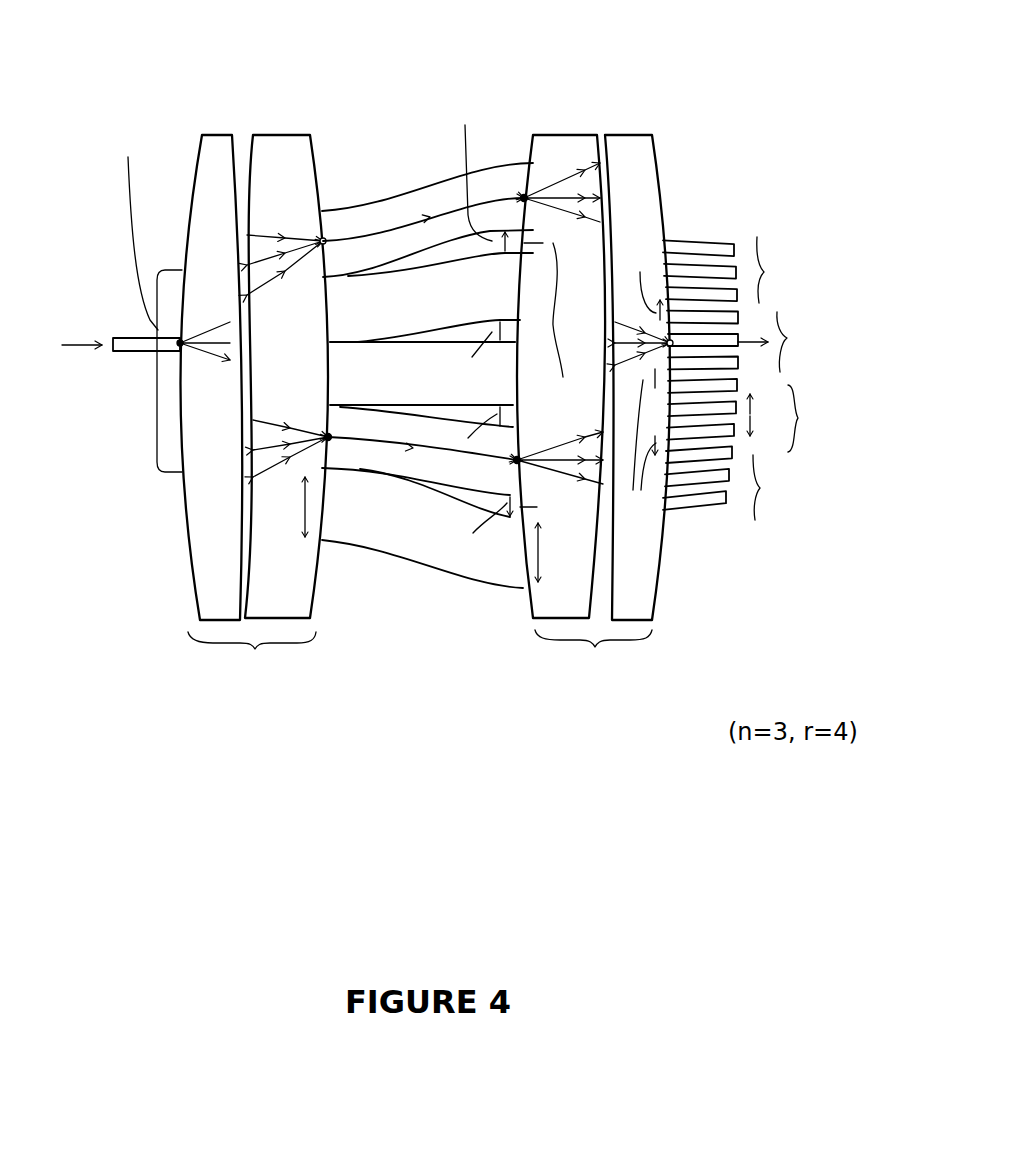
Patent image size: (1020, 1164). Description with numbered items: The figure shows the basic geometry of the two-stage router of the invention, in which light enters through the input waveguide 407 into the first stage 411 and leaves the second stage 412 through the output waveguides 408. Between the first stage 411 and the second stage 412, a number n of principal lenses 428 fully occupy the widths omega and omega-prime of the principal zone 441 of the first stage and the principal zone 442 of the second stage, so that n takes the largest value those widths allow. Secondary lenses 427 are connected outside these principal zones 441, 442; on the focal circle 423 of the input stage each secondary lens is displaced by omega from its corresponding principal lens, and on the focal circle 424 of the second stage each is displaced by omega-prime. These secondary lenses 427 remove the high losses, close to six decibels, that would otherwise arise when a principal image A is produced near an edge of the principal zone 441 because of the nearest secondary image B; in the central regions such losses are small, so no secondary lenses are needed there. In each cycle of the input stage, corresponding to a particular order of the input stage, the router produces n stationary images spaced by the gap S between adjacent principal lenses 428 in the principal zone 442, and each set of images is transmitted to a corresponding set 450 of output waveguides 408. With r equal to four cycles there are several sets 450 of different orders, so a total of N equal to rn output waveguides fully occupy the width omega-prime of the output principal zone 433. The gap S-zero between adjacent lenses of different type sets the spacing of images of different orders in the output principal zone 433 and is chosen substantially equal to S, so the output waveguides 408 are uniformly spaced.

The input waveguide 407 is at (128, 333).
The output waveguide array (periodic grating) 408 is at (725, 337).
The first stage 411 is at (272, 451).
The second stage 412 is at (610, 453).
The focal circle of the input stage 423 is at (317, 587).
The focal circle of the second stage 424 is at (530, 607).
The secondary lenses 427 is at (433, 197).
The principal lenses 428 is at (387, 458).
The output principal zone 433 is at (700, 513).
The principal zone of the first stage 441 is at (367, 352).
The principal zone of the second stage 442 is at (547, 507).
The sets of output waveguides 450 is at (764, 272).